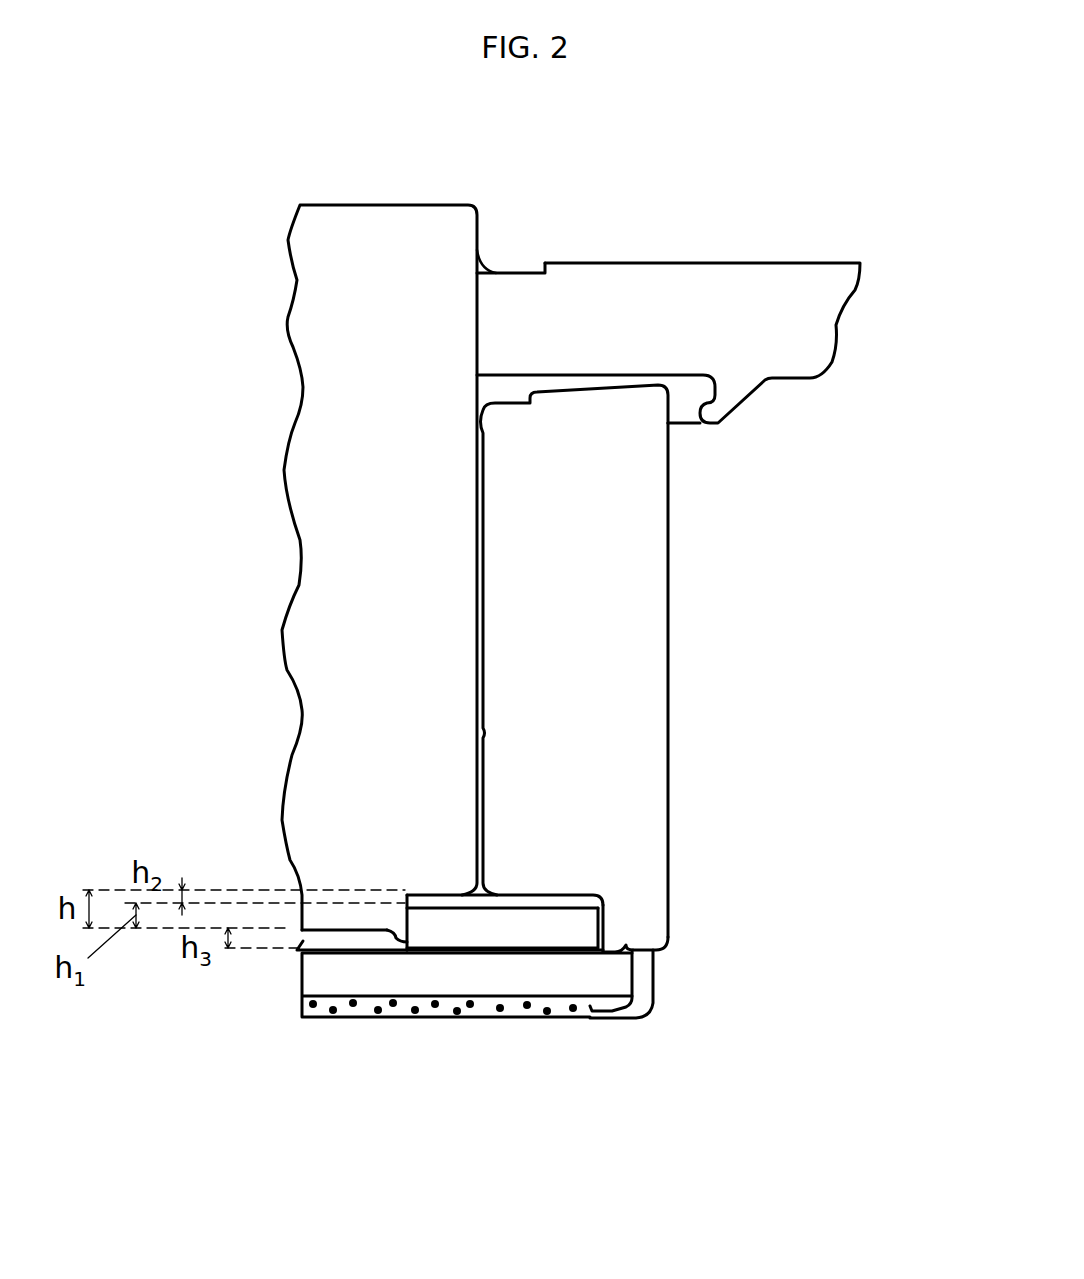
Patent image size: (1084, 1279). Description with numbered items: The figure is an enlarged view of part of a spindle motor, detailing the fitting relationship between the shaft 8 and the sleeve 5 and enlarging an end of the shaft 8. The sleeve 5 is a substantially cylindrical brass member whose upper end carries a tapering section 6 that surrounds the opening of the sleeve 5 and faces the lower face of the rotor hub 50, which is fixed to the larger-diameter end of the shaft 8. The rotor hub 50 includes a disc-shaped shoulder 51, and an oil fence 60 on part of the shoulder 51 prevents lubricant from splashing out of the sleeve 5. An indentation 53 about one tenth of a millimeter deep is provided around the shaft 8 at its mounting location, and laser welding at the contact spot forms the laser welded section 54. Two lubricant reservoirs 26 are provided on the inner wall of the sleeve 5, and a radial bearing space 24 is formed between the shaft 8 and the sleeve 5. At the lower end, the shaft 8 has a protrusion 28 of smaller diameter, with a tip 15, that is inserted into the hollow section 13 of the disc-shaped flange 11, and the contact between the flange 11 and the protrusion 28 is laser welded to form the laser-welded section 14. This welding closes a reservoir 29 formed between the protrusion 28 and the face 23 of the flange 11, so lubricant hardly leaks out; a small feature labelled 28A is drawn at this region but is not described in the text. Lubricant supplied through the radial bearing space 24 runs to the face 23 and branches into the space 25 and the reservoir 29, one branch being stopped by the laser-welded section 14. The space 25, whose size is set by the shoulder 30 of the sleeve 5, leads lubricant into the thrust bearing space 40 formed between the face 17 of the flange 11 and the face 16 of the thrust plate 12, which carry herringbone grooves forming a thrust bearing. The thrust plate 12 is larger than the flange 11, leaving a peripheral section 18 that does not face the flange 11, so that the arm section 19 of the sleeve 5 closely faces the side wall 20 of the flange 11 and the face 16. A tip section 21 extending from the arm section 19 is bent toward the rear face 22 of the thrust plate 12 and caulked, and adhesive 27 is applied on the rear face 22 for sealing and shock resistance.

The sleeve 5 is at (655, 468).
The tapering section 6 is at (570, 383).
The shaft 8 is at (322, 273).
The flange 11 is at (573, 933).
The thrust plate 12 is at (487, 978).
The hollow section 13 is at (303, 957).
The laser-welded section 14 is at (388, 953).
The tip 15 is at (357, 923).
The face of thrust plate 16 is at (358, 952).
The face of flange 17 is at (540, 952).
The peripheral section 18 is at (630, 951).
The arm section 19 is at (652, 927).
The side wall of flange 20 is at (607, 928).
The tip section 21 is at (656, 1014).
The rear face of thrust plate 22 is at (402, 998).
The face of flange 23 is at (593, 900).
The radial bearing space 24 is at (475, 507).
The space 25 is at (548, 903).
The lubricant reservoirs 26 is at (490, 733).
The adhesive 27 is at (447, 1013).
The protrusion 28 is at (318, 923).
The spacer protrusion 28A is at (423, 902).
The reservoir 29 is at (452, 905).
The shoulder 30 is at (519, 897).
The thrust bearing space 40 is at (510, 952).
The rotor hub 50 is at (865, 283).
The shoulder 51 is at (825, 285).
The indentation 53 is at (530, 266).
The laser welded section 54 is at (492, 262).
The oil fence 60 is at (720, 407).